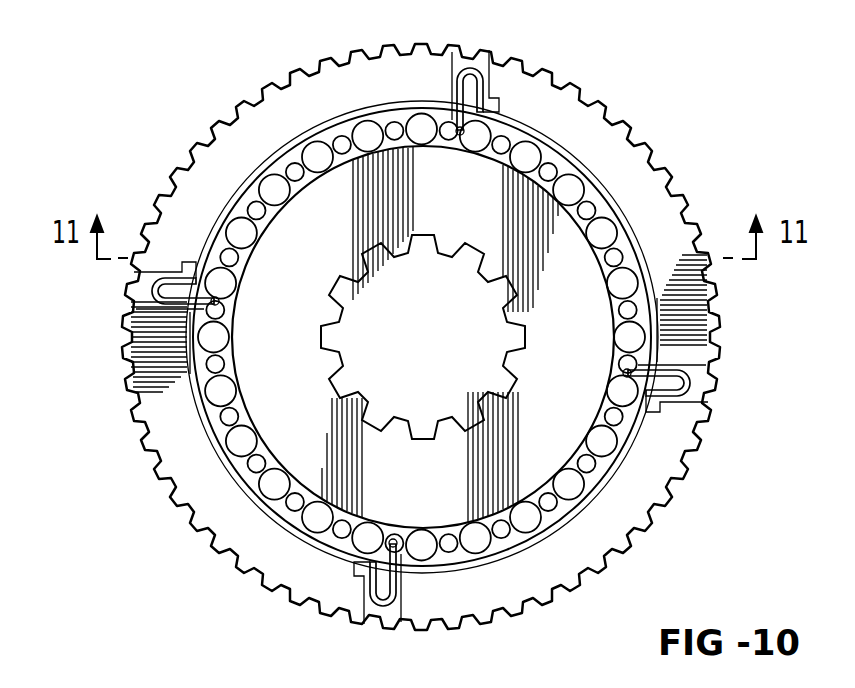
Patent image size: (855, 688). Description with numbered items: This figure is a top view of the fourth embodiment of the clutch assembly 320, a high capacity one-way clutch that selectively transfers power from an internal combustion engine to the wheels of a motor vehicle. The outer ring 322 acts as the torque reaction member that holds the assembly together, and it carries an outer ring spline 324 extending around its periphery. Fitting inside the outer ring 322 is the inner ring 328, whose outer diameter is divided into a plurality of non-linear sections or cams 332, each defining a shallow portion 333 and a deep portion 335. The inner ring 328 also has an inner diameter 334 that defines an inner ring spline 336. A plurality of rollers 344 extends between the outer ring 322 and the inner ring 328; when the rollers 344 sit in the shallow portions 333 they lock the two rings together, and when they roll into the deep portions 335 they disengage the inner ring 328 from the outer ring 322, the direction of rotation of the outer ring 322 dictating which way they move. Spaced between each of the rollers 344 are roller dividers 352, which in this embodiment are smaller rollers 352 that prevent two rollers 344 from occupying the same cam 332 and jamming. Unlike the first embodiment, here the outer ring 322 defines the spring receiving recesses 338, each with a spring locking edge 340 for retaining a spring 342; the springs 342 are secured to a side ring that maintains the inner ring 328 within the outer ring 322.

The clutch assembly 320 is at (101, 128).
The outer ring 322 is at (254, 102).
The outer ring spline 324 is at (642, 140).
The inner ring 328 is at (428, 522).
The cams 332 is at (600, 478).
The shallow portion 333 is at (235, 196).
The inner diameter 334 is at (510, 280).
The deep portion 335 is at (256, 170).
The inner ring spline 336 is at (342, 320).
The spring receiving recesses 338 is at (452, 68).
The spring locking edge 340 is at (484, 112).
The springs 342 is at (489, 56).
The rollers 344 is at (282, 522).
The roller dividers 352 is at (188, 350).